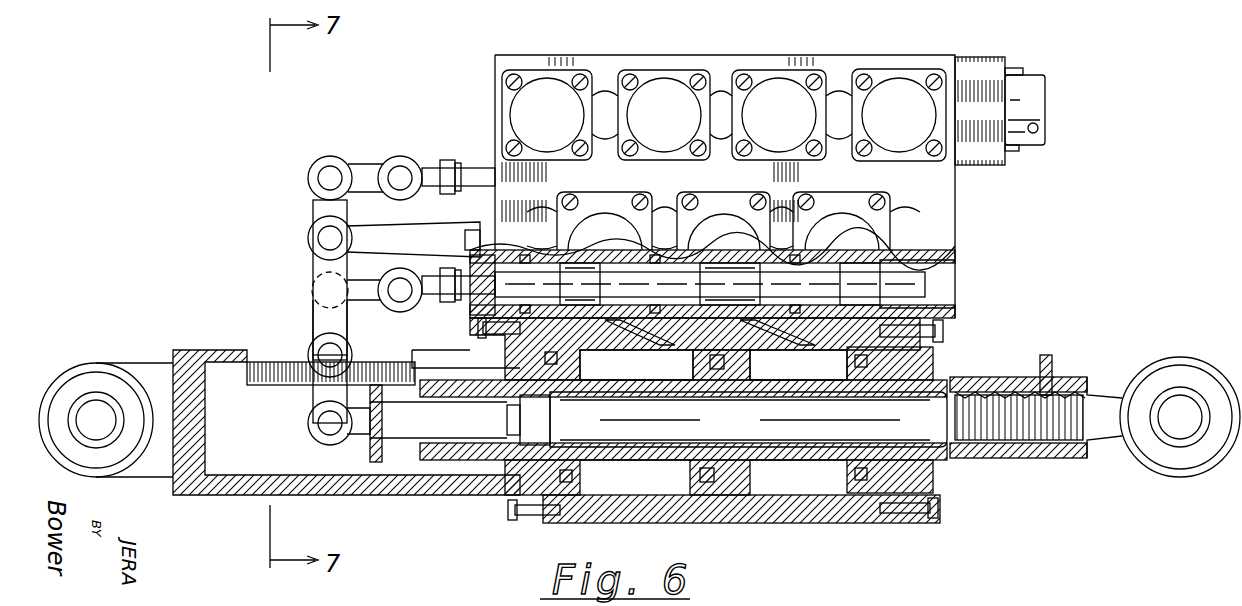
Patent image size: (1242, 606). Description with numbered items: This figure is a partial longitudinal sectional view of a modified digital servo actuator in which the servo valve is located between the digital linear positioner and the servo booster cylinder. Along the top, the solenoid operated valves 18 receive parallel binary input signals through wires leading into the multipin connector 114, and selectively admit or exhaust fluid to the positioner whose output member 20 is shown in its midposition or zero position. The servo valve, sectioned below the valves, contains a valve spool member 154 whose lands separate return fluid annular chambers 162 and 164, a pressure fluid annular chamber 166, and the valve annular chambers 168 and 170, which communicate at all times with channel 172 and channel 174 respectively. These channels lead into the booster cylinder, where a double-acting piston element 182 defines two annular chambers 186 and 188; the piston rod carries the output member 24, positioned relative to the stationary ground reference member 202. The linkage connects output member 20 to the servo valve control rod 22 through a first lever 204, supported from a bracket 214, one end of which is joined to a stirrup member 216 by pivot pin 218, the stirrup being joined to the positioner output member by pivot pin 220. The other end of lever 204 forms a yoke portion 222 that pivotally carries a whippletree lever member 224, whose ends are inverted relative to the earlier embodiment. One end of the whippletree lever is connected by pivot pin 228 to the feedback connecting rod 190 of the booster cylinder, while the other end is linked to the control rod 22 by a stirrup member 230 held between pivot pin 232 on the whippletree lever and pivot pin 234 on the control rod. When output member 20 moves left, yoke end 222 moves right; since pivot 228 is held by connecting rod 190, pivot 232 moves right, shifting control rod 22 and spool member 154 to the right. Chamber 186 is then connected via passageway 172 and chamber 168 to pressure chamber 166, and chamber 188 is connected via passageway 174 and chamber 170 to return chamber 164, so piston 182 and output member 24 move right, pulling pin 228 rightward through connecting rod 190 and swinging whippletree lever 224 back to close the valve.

The solenoid operated valves 18 is at (643, 74).
The output shaft of the digital linear positioner 20 is at (472, 162).
The servo valve control rod 22 is at (458, 300).
The output member of the servo booster cylinder 24 is at (1180, 376).
The multipin connector 114 is at (1038, 96).
The valve spool member 154 is at (926, 286).
The annular chamber 162 is at (577, 262).
The annular chamber 164 is at (880, 250).
The annular chamber 166 is at (714, 262).
The annular chamber 168 is at (658, 335).
The annular chamber 170 is at (752, 335).
The channel 172 is at (616, 345).
The channel 174 is at (806, 340).
The double-acting piston element 182 is at (798, 480).
The annular chamber 186 is at (633, 470).
The annular chamber 188 is at (812, 472).
The feedback connecting rod 190 is at (400, 427).
The ground reference member 202 is at (102, 385).
The first lever 204 is at (318, 216).
The bracket 214 is at (435, 234).
The stirrup member 216 is at (355, 166).
The pivot pin 218 is at (320, 176).
The pivot pin 220 is at (402, 170).
The yoke portion 222 is at (322, 316).
The whippletree lever member 224 is at (320, 396).
The pivot pin 228 is at (325, 426).
The stirrup member 230 is at (386, 306).
The pivot pin 232 is at (312, 290).
The pivot pin 234 is at (403, 293).